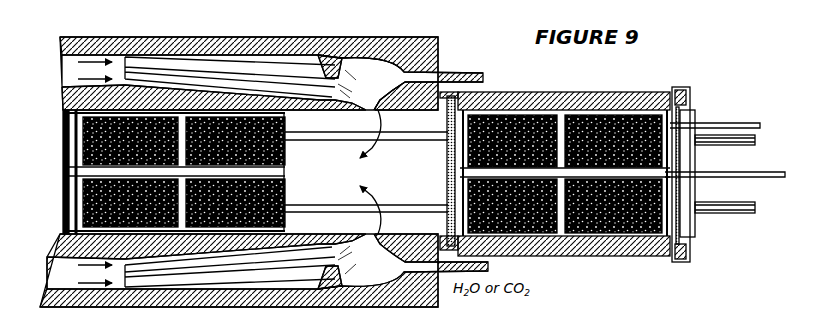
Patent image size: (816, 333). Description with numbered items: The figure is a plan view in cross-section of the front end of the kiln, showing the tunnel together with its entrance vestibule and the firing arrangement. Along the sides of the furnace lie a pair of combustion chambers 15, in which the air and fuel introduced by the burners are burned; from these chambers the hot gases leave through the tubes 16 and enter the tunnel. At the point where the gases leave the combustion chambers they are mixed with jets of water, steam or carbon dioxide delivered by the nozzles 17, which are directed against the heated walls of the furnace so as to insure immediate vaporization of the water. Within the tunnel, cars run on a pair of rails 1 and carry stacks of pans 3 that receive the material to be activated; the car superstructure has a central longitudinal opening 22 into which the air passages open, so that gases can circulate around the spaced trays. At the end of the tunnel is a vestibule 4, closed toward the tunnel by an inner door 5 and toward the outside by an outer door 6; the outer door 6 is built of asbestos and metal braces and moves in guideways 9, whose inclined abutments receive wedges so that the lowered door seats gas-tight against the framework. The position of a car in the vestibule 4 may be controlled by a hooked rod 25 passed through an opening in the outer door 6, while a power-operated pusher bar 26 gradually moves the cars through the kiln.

The rails 1 is at (750, 214).
The pans 3 is at (66, 216).
The vestibule 4 is at (604, 257).
The inner door 5 is at (440, 198).
The outer door 6 is at (697, 177).
The guideways 9 is at (678, 262).
The combustion chambers 15 is at (56, 276).
The tubes 16 is at (322, 272).
The nozzles 17 is at (370, 97).
The central longitudinal opening 22 is at (66, 177).
The hooked rod 25 is at (722, 113).
The pusher bar 26 is at (750, 178).